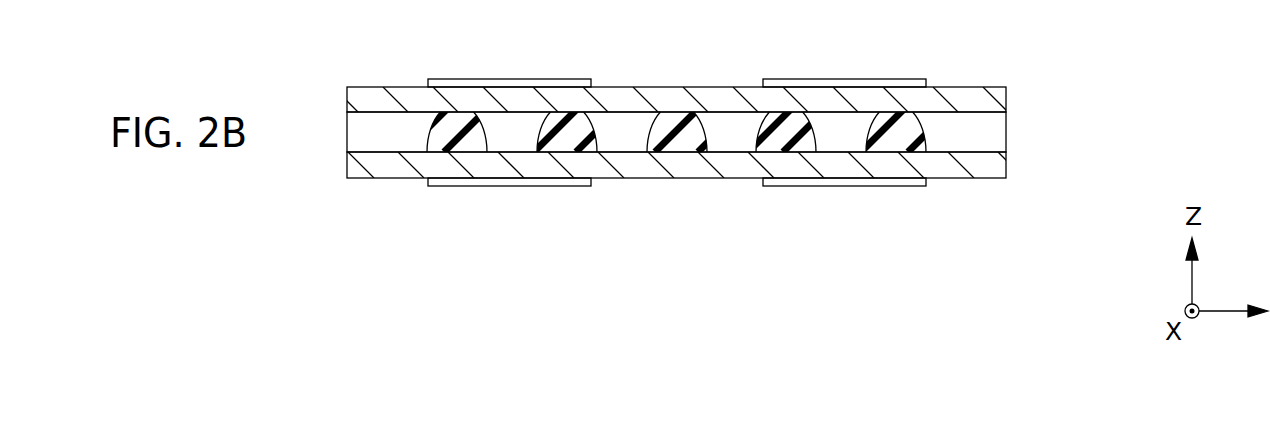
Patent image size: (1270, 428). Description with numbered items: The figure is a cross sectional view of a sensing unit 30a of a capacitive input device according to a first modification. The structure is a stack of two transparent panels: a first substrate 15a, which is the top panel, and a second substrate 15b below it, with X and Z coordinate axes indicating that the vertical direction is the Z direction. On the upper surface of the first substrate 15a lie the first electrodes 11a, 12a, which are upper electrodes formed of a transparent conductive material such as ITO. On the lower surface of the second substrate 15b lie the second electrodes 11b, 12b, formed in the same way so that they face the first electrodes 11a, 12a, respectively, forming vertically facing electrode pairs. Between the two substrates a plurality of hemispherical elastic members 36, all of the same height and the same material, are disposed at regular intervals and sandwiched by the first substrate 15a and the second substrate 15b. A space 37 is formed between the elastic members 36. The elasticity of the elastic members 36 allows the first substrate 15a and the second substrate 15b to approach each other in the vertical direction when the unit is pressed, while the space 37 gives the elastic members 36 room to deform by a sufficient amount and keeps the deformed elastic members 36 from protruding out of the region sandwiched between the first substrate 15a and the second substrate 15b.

The sensing unit 30a is at (347, 221).
The first electrode 11a is at (513, 80).
The second electrode 11b is at (513, 186).
The first electrode 12a is at (849, 79).
The second electrode 12b is at (848, 186).
The first substrate 15a is at (1007, 98).
The second substrate 15b is at (1007, 162).
The hemispherical elastic member 36 is at (925, 132).
The space 37 is at (362, 152).